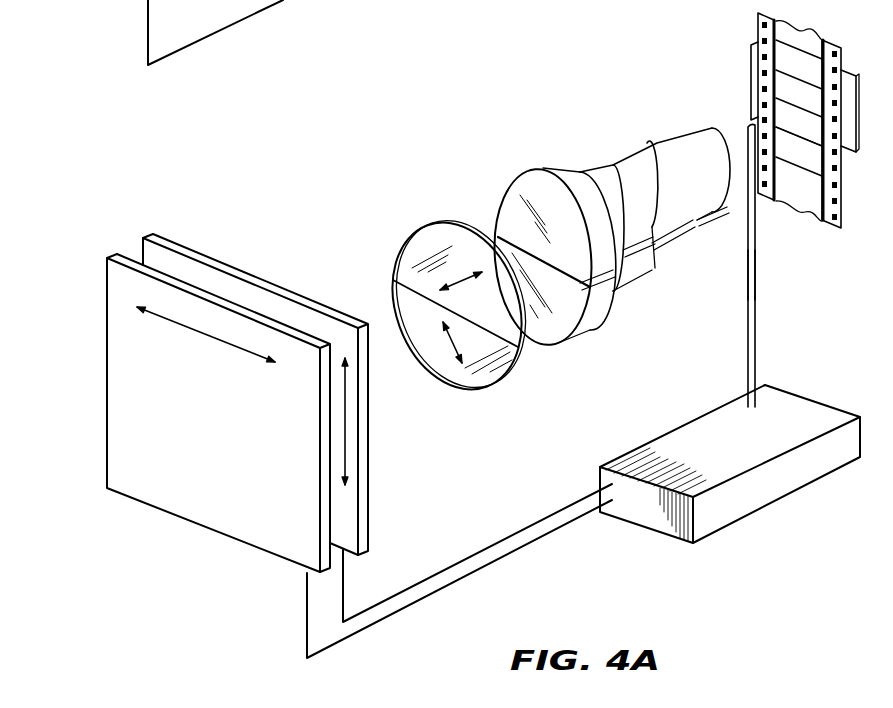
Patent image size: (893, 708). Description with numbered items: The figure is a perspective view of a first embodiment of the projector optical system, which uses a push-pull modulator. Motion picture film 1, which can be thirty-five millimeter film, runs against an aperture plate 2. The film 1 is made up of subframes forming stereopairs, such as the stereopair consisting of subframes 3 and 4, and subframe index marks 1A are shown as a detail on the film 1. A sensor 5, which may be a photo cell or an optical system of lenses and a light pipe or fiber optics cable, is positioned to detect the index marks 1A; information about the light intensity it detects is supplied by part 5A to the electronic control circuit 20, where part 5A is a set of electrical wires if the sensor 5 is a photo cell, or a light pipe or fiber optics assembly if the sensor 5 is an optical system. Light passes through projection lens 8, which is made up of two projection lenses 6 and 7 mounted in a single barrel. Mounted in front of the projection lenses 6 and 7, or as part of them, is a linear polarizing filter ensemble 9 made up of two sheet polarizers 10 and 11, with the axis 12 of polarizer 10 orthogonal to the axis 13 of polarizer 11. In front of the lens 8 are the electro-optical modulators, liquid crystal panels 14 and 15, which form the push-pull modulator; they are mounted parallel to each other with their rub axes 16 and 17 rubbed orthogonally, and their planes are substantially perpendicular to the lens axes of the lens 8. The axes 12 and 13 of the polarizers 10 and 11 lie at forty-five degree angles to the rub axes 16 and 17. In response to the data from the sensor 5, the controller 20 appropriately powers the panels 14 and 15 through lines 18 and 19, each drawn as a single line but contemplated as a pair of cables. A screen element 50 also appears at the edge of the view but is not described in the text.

The motion picture film 1 is at (828, 36).
The subframe index marks 1A is at (762, 52).
The aperture plate 2 is at (848, 70).
The subframe 3 is at (848, 110).
The subframe 4 is at (812, 118).
The sensor 5 is at (748, 126).
The part 5A is at (760, 270).
The projection lens 6 is at (625, 150).
The projection lens 7 is at (602, 323).
The projection lens 8 is at (523, 165).
The linear polarizing filter ensemble 9 is at (384, 264).
The sheet polarizer 10 is at (410, 230).
The sheet polarizer 11 is at (503, 387).
The axis of polarizer 12 is at (467, 267).
The axis of polarizer 13 is at (447, 352).
The liquid crystal panel 14 is at (102, 322).
The liquid crystal panel 15 is at (283, 280).
The rub axis 16 is at (203, 332).
The rub axis 17 is at (348, 408).
The line 18 is at (477, 555).
The line 19 is at (432, 597).
The electronic control circuit 20 is at (772, 502).
The screen 50 is at (322, 0).